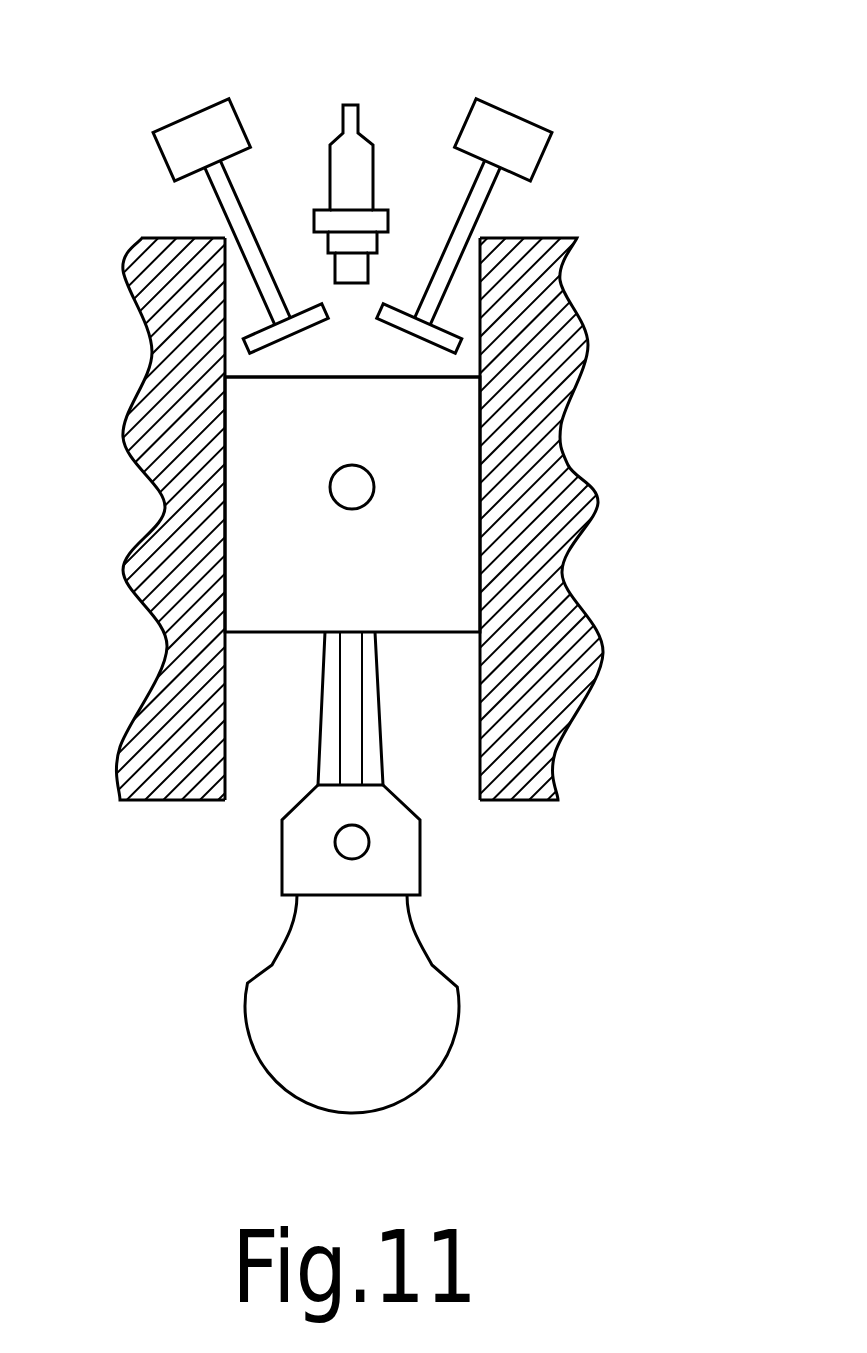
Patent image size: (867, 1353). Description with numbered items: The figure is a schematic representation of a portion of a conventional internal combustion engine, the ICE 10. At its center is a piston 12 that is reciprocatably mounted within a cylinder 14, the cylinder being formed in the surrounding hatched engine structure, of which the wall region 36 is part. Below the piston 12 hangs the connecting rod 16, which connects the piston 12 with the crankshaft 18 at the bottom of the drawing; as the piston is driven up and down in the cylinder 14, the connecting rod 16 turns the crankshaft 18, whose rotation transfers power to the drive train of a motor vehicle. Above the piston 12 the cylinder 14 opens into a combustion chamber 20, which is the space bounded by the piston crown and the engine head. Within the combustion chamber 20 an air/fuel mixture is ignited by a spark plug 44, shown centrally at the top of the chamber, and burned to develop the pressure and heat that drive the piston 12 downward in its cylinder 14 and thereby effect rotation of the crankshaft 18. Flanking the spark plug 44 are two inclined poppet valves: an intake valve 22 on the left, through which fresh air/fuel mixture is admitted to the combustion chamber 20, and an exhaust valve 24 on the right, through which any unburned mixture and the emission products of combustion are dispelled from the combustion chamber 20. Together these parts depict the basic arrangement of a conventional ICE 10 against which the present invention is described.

The ICE 10 is at (627, 367).
The piston 12 is at (420, 482).
The cylinder 14 is at (437, 655).
The connecting rod 16 is at (352, 692).
The crankshaft 18 is at (277, 985).
The combustion chamber 20 is at (313, 347).
The intake valve 22 is at (243, 190).
The exhaust valve 24 is at (490, 205).
The cylinder block 36 is at (550, 320).
The spark plug 44 is at (360, 117).